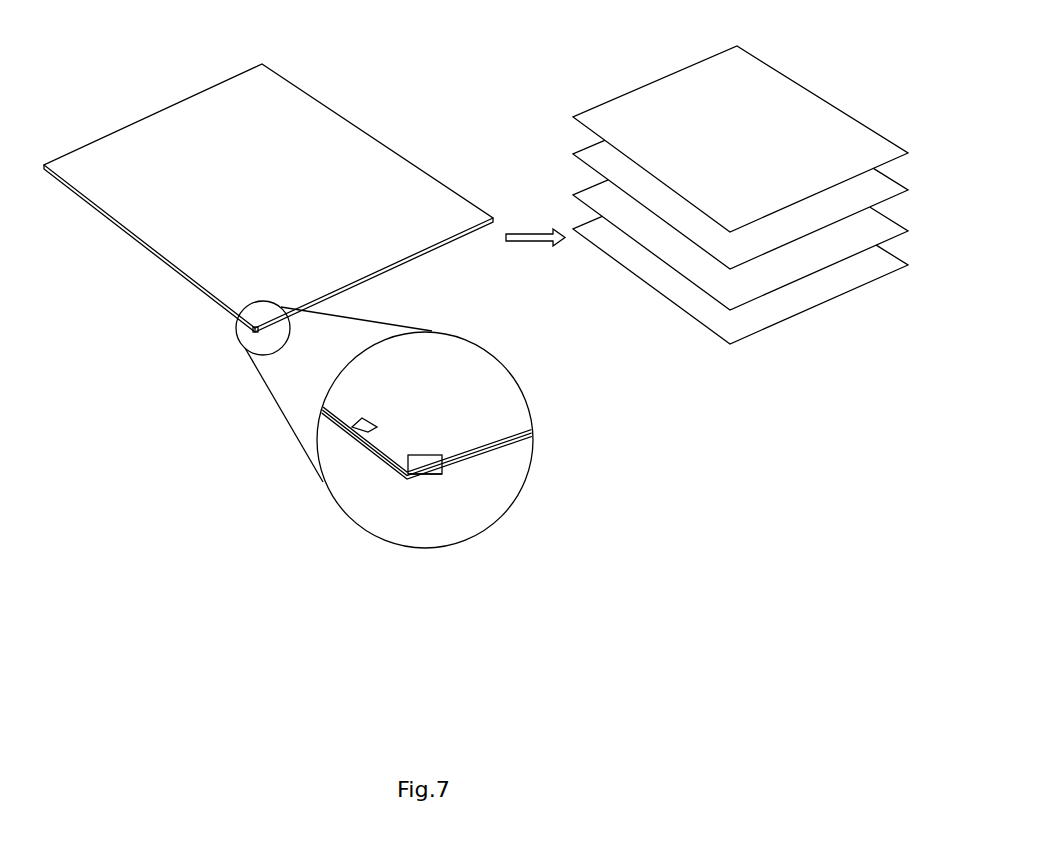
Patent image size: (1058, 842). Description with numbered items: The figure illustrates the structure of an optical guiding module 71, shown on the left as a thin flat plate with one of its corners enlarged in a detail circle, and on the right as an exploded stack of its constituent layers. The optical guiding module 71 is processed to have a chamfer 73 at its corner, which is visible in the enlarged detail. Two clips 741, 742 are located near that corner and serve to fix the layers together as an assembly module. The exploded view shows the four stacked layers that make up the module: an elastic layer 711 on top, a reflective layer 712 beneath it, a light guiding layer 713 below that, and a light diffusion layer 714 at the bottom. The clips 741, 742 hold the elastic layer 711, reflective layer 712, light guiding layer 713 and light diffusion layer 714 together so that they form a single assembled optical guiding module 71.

The optical guiding module 71 is at (319, 116).
The elastic layer 711 is at (795, 102).
The reflective layer 712 is at (890, 187).
The light guiding layer 713 is at (882, 235).
The light diffusion layer 714 is at (843, 288).
The chamfer 73 is at (432, 478).
The clip 741 is at (435, 466).
The clip 742 is at (363, 426).